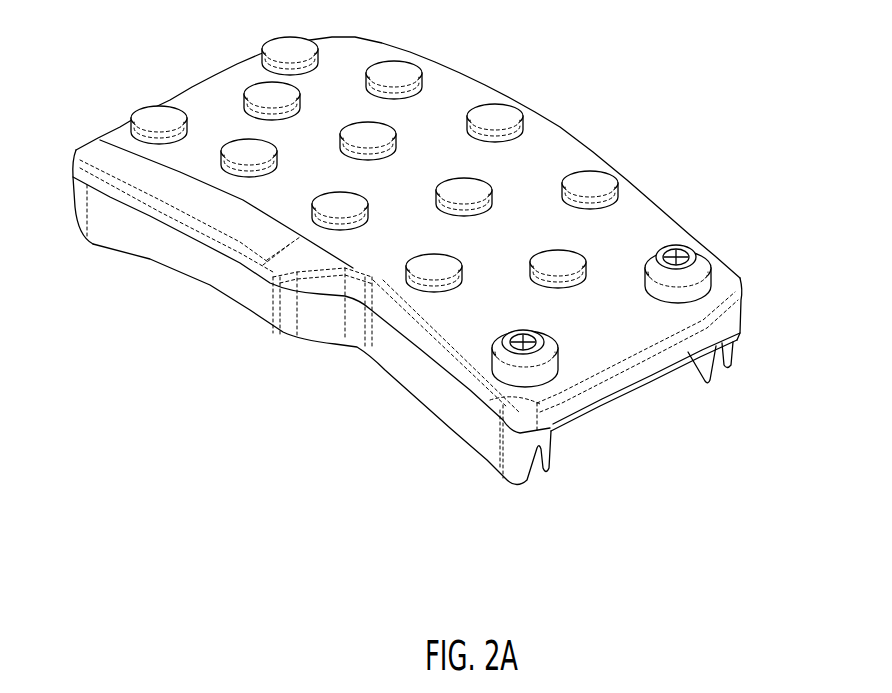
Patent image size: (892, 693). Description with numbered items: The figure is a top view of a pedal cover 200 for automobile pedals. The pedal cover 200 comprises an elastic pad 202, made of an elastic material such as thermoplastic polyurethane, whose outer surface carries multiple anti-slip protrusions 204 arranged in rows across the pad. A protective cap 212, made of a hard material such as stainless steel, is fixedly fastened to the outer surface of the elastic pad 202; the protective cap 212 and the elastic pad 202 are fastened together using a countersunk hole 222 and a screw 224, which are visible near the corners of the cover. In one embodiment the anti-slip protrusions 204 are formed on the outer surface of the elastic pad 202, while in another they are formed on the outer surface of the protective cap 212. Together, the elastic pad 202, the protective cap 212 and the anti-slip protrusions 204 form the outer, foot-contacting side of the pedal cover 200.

The pedal cover 200 is at (522, 86).
The elastic pad 202 is at (100, 238).
The anti-slip protrusions 204 is at (597, 178).
The protective cap 212 is at (619, 343).
The countersunk hole 222 is at (722, 279).
The screw 224 is at (690, 252).